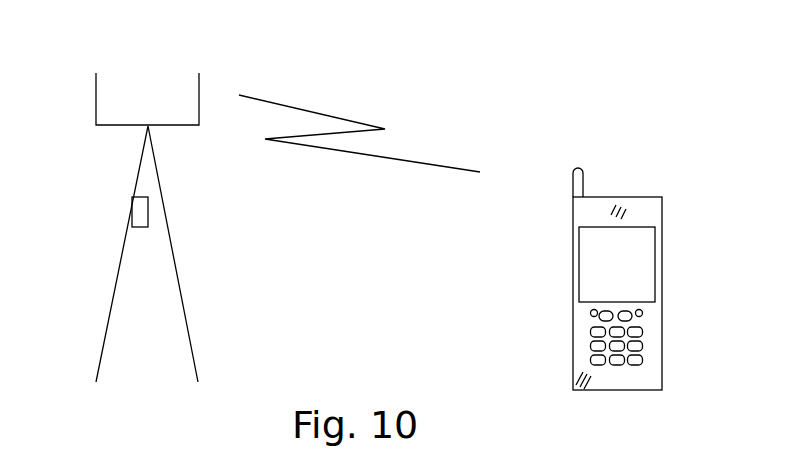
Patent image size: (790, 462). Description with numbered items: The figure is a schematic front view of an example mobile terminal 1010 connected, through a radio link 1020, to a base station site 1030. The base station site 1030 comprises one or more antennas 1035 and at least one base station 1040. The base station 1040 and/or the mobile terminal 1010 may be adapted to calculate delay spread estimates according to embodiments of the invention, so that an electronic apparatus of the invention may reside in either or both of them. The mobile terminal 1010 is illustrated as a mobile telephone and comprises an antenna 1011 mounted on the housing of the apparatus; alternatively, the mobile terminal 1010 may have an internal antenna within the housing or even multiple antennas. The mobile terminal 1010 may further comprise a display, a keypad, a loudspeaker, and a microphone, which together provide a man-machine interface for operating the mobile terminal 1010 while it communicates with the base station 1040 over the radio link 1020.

The mobile terminal 1010 is at (594, 257).
The antenna 1011 is at (573, 172).
The radio link 1020 is at (377, 158).
The base station site 1030 is at (116, 288).
The antennas 1035 is at (96, 103).
The base station 1040 is at (138, 207).